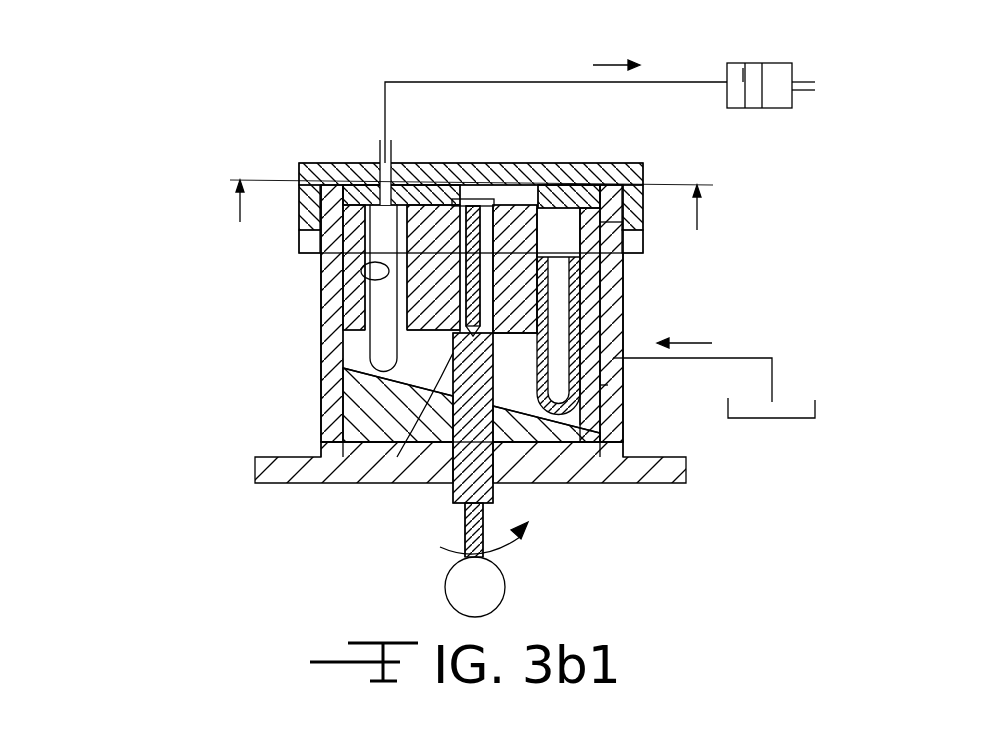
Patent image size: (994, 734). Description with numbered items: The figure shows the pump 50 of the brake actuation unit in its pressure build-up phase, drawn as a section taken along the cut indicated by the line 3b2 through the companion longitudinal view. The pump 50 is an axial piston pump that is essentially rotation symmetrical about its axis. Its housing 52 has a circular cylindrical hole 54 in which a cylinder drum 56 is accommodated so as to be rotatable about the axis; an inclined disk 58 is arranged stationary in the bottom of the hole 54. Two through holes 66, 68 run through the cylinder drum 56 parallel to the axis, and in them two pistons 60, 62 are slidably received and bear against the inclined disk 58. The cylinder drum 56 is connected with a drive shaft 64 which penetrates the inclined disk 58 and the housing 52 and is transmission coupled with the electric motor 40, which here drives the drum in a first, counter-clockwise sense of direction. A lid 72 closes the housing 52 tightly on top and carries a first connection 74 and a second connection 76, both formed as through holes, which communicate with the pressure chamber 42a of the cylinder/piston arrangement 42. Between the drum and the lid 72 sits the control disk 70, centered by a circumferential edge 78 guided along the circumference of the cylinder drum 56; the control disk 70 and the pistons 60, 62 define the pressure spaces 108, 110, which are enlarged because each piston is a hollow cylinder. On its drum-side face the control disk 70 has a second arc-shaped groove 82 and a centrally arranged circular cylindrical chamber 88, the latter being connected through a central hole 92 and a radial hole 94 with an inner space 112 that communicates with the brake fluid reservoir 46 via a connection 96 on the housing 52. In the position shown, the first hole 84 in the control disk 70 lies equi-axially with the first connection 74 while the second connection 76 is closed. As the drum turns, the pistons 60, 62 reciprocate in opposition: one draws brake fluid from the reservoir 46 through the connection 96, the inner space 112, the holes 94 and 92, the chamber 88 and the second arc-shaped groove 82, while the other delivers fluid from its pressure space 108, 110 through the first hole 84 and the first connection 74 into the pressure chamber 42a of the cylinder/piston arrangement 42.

The electric motor 40 is at (505, 585).
The cylinder/piston arrangement 42 is at (772, 62).
The pressure chamber 42a is at (740, 77).
The brake fluid reservoir 46 is at (795, 404).
The pump 50 is at (245, 100).
The housing 52 is at (323, 380).
The circular cylindrical hole 54 is at (350, 347).
The cylinder drum 56 is at (345, 303).
The inclined disk 58 is at (352, 395).
The piston 60 is at (368, 233).
The piston 62 is at (612, 282).
The drive shaft 64 is at (453, 500).
The through hole 66 is at (362, 272).
The through hole 68 is at (600, 306).
The control disk 70 is at (592, 185).
The lid 72 is at (627, 168).
The first connection 74 is at (372, 188).
The second connection 76 is at (569, 185).
The circumferential edge 78 is at (608, 222).
The second arc-shaped groove 82 is at (530, 185).
The first hole 84 is at (366, 175).
The circular cylindrical chamber 88 is at (488, 197).
The central hole 92 is at (397, 457).
The radial hole 94 is at (562, 445).
The connection 96 is at (622, 358).
The pressure space 108 is at (333, 163).
The pressure space 110 is at (590, 245).
The inner space 112 is at (608, 385).
The section line 3b2 is at (466, 206).